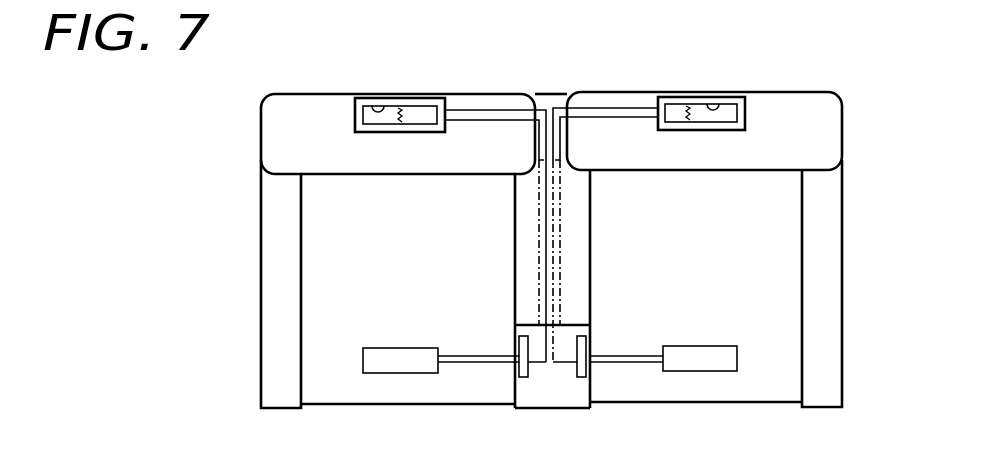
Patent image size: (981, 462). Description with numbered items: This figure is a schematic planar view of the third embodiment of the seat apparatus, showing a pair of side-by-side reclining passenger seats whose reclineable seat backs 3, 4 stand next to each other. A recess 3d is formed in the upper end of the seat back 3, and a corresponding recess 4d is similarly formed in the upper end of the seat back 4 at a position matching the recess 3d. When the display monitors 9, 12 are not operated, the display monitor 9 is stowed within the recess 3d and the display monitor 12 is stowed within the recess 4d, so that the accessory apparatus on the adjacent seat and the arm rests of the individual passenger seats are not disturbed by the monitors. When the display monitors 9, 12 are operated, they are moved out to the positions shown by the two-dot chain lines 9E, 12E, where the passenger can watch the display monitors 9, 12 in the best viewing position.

The seat back 3 is at (792, 103).
The recess 3d is at (713, 102).
The seat back 4 is at (303, 110).
The recess 4d is at (378, 101).
The display monitor 9 is at (677, 102).
The two-dot chain line 9E is at (693, 372).
The display monitor 12 is at (422, 110).
The two-dot chain line 12E is at (420, 373).